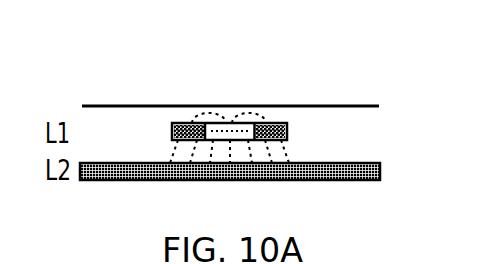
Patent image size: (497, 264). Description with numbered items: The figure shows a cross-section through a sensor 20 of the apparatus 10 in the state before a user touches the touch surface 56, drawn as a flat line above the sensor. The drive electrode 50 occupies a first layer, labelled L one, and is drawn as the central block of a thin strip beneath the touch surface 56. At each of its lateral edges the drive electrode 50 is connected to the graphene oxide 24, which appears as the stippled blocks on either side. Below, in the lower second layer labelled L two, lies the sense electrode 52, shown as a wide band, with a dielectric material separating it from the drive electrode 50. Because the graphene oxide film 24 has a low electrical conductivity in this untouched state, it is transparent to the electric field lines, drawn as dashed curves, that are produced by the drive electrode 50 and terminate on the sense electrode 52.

The apparatus 10 is at (383, 74).
The sensor 20 is at (365, 139).
The graphene oxide film 24 is at (190, 123).
The drive electrode 50 is at (232, 123).
The sense electrode 52 is at (233, 181).
The touch surface 56 is at (92, 106).